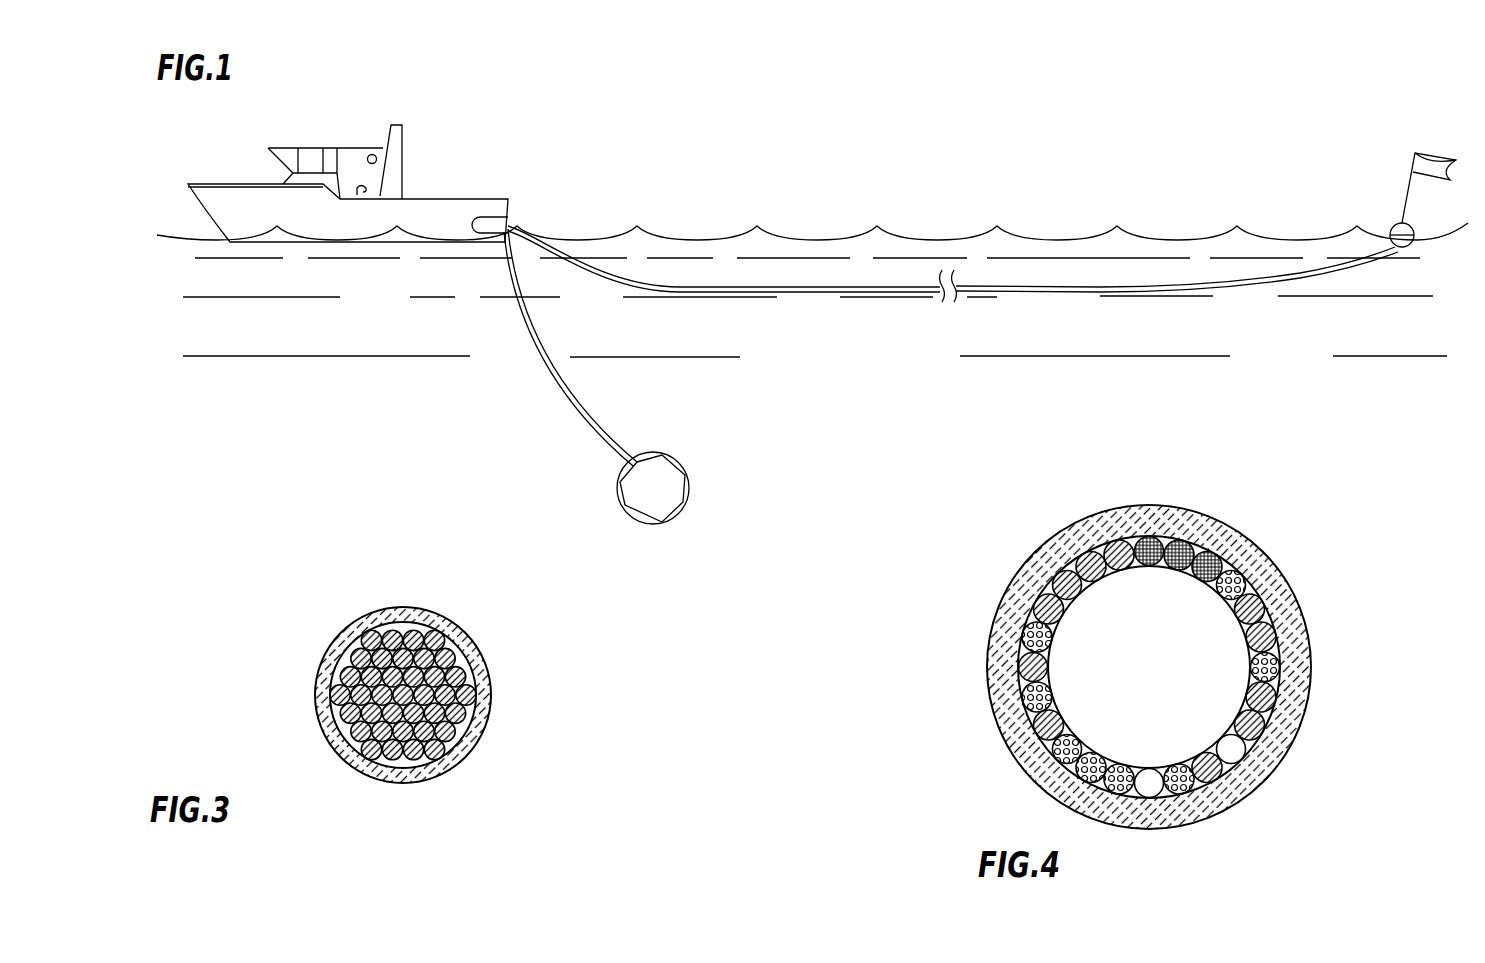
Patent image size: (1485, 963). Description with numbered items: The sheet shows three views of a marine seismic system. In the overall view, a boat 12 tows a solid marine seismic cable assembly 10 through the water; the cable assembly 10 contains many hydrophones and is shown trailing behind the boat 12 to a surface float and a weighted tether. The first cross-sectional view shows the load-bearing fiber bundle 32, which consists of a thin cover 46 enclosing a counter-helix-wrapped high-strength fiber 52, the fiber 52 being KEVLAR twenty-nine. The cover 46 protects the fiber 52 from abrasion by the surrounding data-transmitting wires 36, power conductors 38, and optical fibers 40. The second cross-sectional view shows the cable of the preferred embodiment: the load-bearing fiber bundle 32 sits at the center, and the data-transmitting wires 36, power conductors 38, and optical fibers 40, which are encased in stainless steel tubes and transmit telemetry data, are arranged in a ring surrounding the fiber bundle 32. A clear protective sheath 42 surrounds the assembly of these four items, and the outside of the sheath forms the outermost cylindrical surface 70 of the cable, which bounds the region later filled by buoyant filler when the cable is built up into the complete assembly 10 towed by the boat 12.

In FIG. 1, the solid marine seismic cable assembly 10 is at (785, 273).
In FIG. 1, the boat 12 is at (462, 158).
In FIG. 3, the load-bearing fiber bundle 32 is at (397, 665).
In FIG. 4, the load-bearing fiber bundle 32 is at (1152, 675).
In FIG. 4, the data-transmitting wires 36 is at (1277, 621).
In FIG. 4, the power conductors 38 is at (1147, 538).
In FIG. 4, the optical fibers 40 is at (1245, 567).
In FIG. 4, the protective sheath 42 is at (1149, 660).
In FIG. 3, the thin cover 46 is at (470, 750).
In FIG. 3, the high-strength fiber 52 is at (322, 688).
In FIG. 4, the outermost cylindrical surface 70 is at (1236, 804).